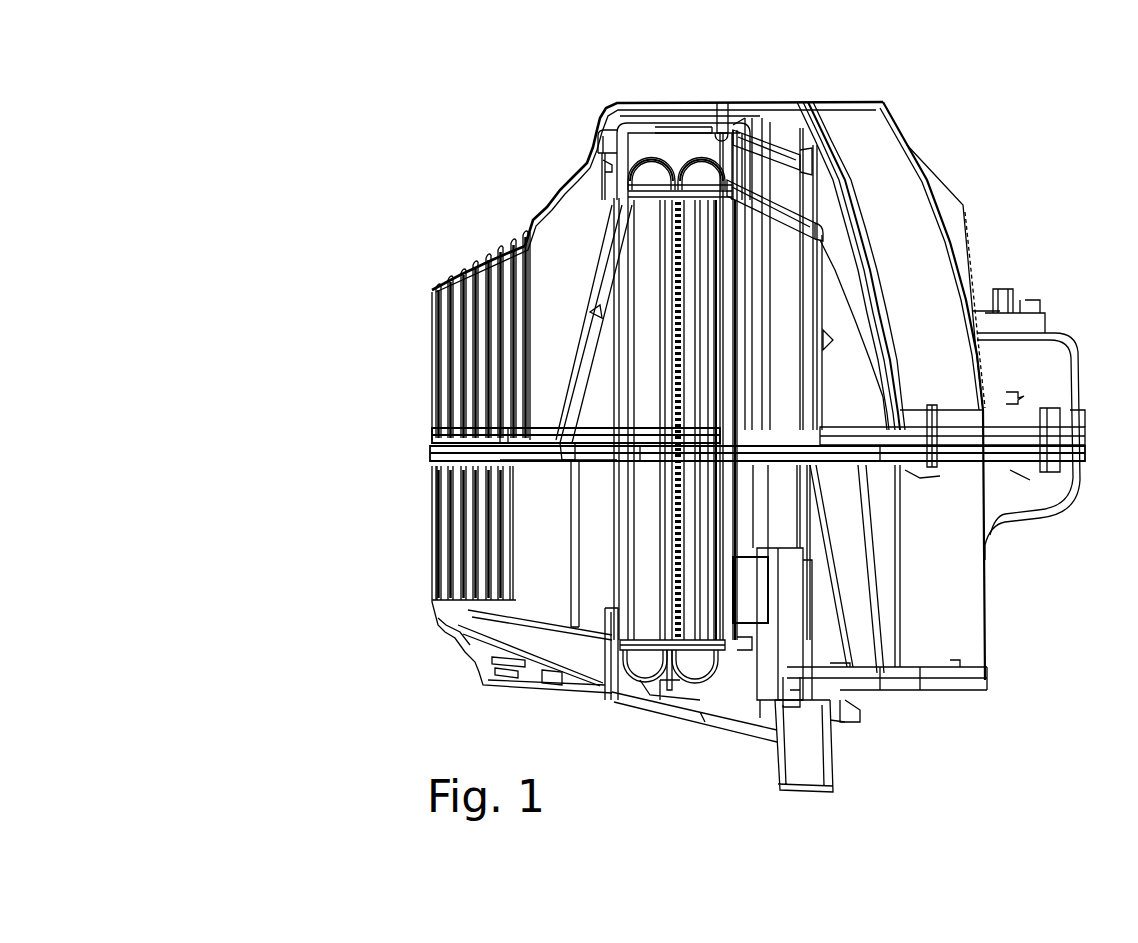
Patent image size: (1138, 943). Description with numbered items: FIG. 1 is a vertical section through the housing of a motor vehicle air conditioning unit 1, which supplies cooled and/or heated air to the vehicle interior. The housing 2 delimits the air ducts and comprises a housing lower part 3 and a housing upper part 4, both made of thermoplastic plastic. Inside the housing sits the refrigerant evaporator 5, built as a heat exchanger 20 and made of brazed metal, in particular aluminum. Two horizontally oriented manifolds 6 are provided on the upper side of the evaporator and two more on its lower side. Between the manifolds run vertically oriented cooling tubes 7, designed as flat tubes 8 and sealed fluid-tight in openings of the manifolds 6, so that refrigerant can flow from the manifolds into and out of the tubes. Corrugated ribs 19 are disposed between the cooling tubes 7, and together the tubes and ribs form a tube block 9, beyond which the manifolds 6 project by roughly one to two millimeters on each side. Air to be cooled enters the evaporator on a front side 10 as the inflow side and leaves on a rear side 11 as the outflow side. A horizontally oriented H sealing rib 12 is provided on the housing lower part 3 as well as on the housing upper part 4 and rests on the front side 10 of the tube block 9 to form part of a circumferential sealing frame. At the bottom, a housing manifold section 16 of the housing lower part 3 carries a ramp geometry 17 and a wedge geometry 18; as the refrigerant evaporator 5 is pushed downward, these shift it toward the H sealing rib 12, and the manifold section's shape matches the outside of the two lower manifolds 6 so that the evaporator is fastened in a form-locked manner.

The motor vehicle air conditioning unit 1 is at (258, 715).
The housing 2 is at (778, 422).
The housing lower part 3 is at (950, 585).
The housing upper part 4 is at (868, 150).
The refrigerant evaporator 5 is at (915, 582).
The manifolds 6 is at (703, 176).
The cooling tubes 7 is at (505, 385).
The flat tubes 8 is at (505, 385).
The tube block 9 is at (644, 286).
The front side 10 is at (630, 311).
The rear side 11 is at (718, 229).
The H sealing rib 12 is at (598, 183).
The housing manifold section 16 is at (672, 127).
The ramp geometry 17 is at (897, 741).
The wedge geometry 18 is at (772, 690).
The corrugated ribs 19 is at (671, 382).
The heat exchanger 20 is at (705, 527).